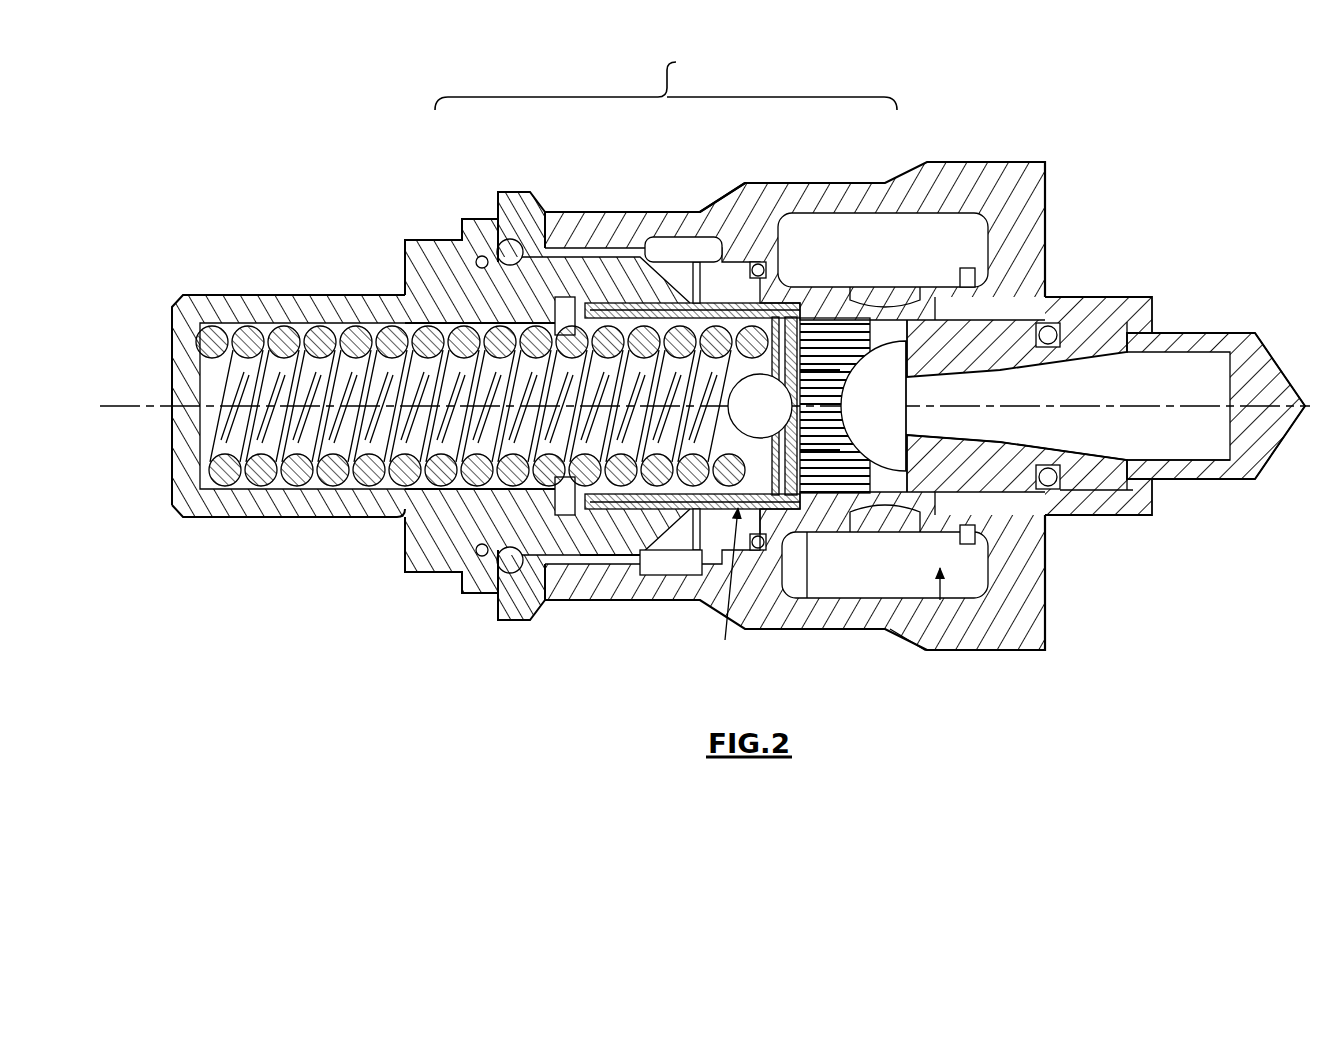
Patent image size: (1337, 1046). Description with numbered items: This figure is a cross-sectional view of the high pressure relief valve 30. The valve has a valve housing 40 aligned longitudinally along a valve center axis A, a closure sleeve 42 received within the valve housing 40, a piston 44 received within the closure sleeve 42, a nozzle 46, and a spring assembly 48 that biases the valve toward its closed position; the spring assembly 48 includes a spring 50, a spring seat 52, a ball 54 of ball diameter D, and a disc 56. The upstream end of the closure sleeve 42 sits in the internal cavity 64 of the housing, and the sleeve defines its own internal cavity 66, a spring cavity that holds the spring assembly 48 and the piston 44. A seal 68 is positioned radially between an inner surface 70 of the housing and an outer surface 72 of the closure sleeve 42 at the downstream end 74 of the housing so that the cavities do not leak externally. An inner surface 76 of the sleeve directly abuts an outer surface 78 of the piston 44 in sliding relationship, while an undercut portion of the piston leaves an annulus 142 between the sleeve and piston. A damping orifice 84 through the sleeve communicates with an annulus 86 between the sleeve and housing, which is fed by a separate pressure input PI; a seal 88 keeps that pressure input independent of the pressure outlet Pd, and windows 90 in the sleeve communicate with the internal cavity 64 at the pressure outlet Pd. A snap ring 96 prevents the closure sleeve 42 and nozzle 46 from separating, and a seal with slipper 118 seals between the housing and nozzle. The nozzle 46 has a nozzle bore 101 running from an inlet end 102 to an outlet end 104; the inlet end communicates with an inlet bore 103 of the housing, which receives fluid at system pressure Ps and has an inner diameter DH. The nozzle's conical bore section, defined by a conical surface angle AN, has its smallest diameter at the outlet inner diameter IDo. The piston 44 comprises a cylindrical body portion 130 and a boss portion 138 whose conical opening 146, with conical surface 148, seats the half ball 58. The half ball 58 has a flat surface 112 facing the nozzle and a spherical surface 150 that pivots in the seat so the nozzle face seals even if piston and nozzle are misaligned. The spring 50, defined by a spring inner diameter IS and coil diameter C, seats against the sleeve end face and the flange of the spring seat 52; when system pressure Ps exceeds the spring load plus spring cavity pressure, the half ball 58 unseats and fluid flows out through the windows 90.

The high pressure relief valve 30 is at (1068, 88).
The valve housing 40 is at (1046, 188).
The closure sleeve 42 is at (368, 512).
The piston 44 is at (726, 630).
The nozzle 46 is at (1100, 322).
The spring assembly 48 is at (666, 79).
The spring 50 is at (333, 505).
The spring seat 52 is at (668, 300).
The ball 54 is at (744, 312).
The disc 56 is at (798, 215).
The half ball 58 is at (878, 460).
The internal cavity 64 is at (940, 600).
The internal cavity 66 is at (405, 545).
The seal 68 is at (483, 598).
The inner surface 70 is at (516, 616).
The outer surface 72 is at (512, 556).
The downstream end 74 is at (498, 205).
The inner surface 76 is at (818, 280).
The outer surface 78 is at (800, 330).
The damping orifice 84 is at (700, 568).
The annulus 86 is at (655, 572).
The seal 88 is at (768, 578).
The windows 90 is at (902, 275).
The snap ring 96 is at (962, 550).
The nozzle bore 101 is at (1128, 490).
The inlet end 102 is at (1150, 318).
The inlet bore 103 is at (1205, 350).
The outlet end 104 is at (945, 445).
The flat surface 112 is at (906, 416).
The seal with slipper 118 is at (1056, 494).
The cylindrical body portion 130 is at (615, 510).
The boss portion 138 is at (814, 540).
The annulus 142 is at (774, 262).
The conical opening 146 is at (810, 445).
The conical surface 148 is at (850, 376).
The spherical surface 150 is at (842, 383).
The valve center axis A is at (303, 400).
The coil diameter C is at (460, 298).
The ball diameter D is at (762, 376).
The spring inner diameter IS is at (418, 358).
The outlet inner diameter IDo is at (948, 435).
The conical surface angle AN is at (985, 435).
The inner diameter DH is at (1140, 460).
The system pressure Ps is at (1226, 420).
The pressure outlet Pd is at (898, 262).
The pressure input PI is at (680, 572).